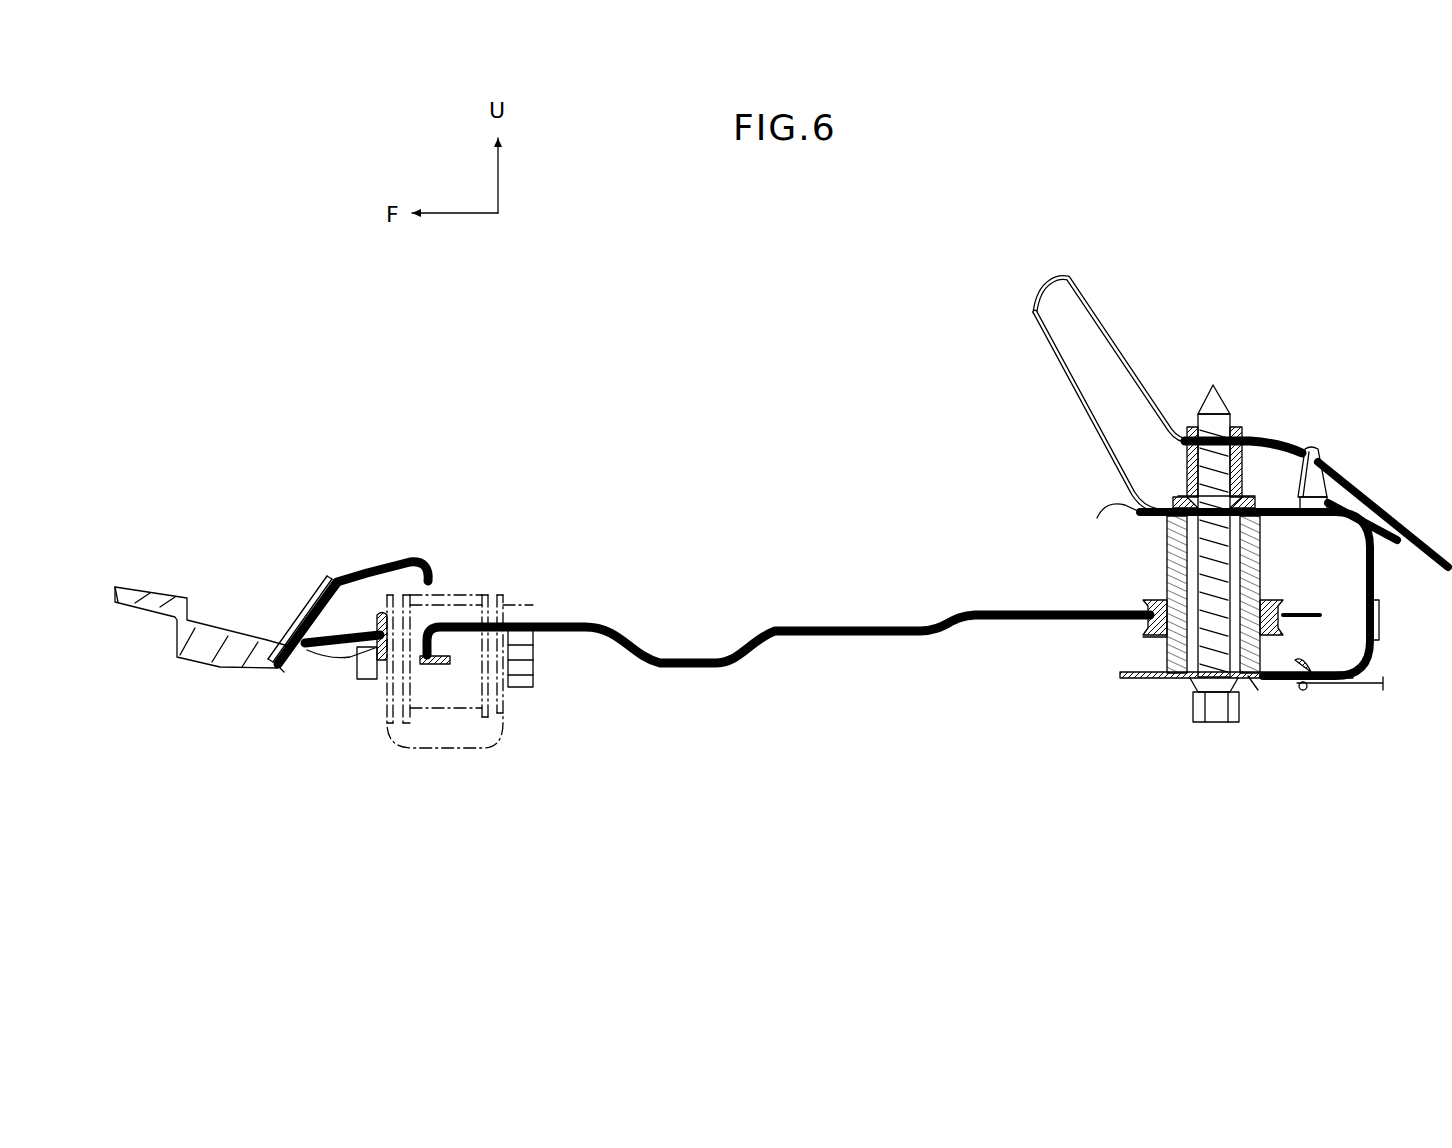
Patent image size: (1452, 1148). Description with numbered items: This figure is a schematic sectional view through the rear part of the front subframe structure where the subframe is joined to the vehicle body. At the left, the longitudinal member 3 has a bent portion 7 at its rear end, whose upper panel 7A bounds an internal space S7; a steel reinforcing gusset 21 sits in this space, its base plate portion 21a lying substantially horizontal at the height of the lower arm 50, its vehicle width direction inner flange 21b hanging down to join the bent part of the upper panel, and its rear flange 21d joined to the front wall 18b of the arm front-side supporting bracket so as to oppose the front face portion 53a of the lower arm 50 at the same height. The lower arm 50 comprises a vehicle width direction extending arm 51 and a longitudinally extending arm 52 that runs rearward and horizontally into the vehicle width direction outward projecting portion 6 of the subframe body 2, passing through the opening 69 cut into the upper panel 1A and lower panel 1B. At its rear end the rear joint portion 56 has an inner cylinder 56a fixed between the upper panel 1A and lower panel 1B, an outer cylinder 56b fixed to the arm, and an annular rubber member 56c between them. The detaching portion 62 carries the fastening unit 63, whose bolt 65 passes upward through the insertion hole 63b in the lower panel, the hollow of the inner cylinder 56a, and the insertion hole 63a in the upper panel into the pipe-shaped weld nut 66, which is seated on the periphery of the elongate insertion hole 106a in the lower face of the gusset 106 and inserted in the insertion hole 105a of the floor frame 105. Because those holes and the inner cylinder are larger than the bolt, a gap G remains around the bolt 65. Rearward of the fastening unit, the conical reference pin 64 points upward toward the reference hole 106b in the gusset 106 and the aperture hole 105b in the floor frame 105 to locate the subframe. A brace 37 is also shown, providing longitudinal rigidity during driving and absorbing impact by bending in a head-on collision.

The longitudinal member 3 is at (168, 578).
The bent portion 7 is at (352, 570).
The upper panel 7A is at (335, 582).
The reinforcing gusset 21 is at (305, 625).
The base plate portion 21a is at (323, 660).
The vehicle width direction inner flange 21b is at (284, 670).
The rear flange 21d is at (415, 664).
The front wall 18b is at (380, 622).
The internal space S7 is at (325, 712).
The front face portion 53a is at (425, 680).
The lower arm 50 is at (705, 705).
The vehicle width direction extending arm 51 is at (536, 615).
The longitudinally extending arm 52 is at (827, 618).
The floor frame 105 is at (1105, 330).
The gusset 106 is at (1062, 370).
The insertion hole 105a is at (1240, 438).
The aperture hole 105b is at (1330, 470).
The elongate insertion hole 106a is at (1176, 496).
The reference hole 106b is at (1345, 503).
The reference pin 64 is at (1312, 450).
The weld nut 66 is at (1244, 470).
The opening 69 is at (1092, 545).
The fastening unit 63 is at (1254, 730).
The insertion hole 63a is at (1193, 690).
The insertion hole 63b is at (1168, 550).
The rear joint portion 56 is at (1130, 598).
The inner cylinder 56a is at (1265, 575).
The outer cylinder 56b is at (1148, 642).
The annular rubber member 56c is at (1152, 597).
The upper panel 1A is at (1374, 576).
The lower panel 1B is at (1376, 627).
The vehicle width direction outward projecting portion 6 is at (1375, 645).
The detaching portion 62 is at (1302, 738).
The brace 37 is at (1352, 690).
The bolt 65 is at (1215, 724).
The gap G is at (1260, 680).
The subframe body 2 is at (1163, 790).